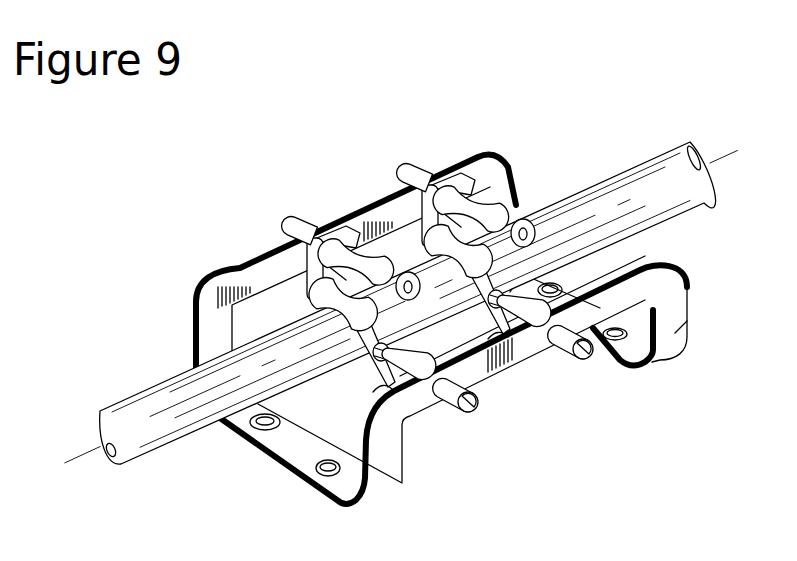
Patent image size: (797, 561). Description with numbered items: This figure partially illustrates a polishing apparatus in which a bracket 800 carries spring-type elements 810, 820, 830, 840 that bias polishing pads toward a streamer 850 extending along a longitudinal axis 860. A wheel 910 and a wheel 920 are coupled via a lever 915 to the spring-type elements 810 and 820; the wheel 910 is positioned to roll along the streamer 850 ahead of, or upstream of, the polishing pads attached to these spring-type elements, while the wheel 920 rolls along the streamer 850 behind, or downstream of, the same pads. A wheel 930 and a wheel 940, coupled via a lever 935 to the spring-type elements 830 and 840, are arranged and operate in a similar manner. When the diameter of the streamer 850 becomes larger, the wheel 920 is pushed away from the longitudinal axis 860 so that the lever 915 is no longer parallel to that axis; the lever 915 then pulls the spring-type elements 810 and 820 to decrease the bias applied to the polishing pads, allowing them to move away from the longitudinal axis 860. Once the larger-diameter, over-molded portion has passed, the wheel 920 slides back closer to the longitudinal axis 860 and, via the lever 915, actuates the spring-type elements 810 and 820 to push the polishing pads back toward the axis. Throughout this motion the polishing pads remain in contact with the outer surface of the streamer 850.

The bracket 800 is at (675, 315).
The spring-type element 810 is at (325, 268).
The spring-type element 820 is at (376, 352).
The spring-type element 830 is at (462, 200).
The spring-type element 840 is at (500, 310).
The streamer 850 is at (125, 432).
The longitudinal axis 860 is at (713, 167).
The wheel 910 is at (323, 303).
The lever 915 is at (313, 237).
The wheel 920 is at (397, 240).
The wheel 930 is at (462, 255).
The lever 935 is at (470, 242).
The wheel 940 is at (502, 223).